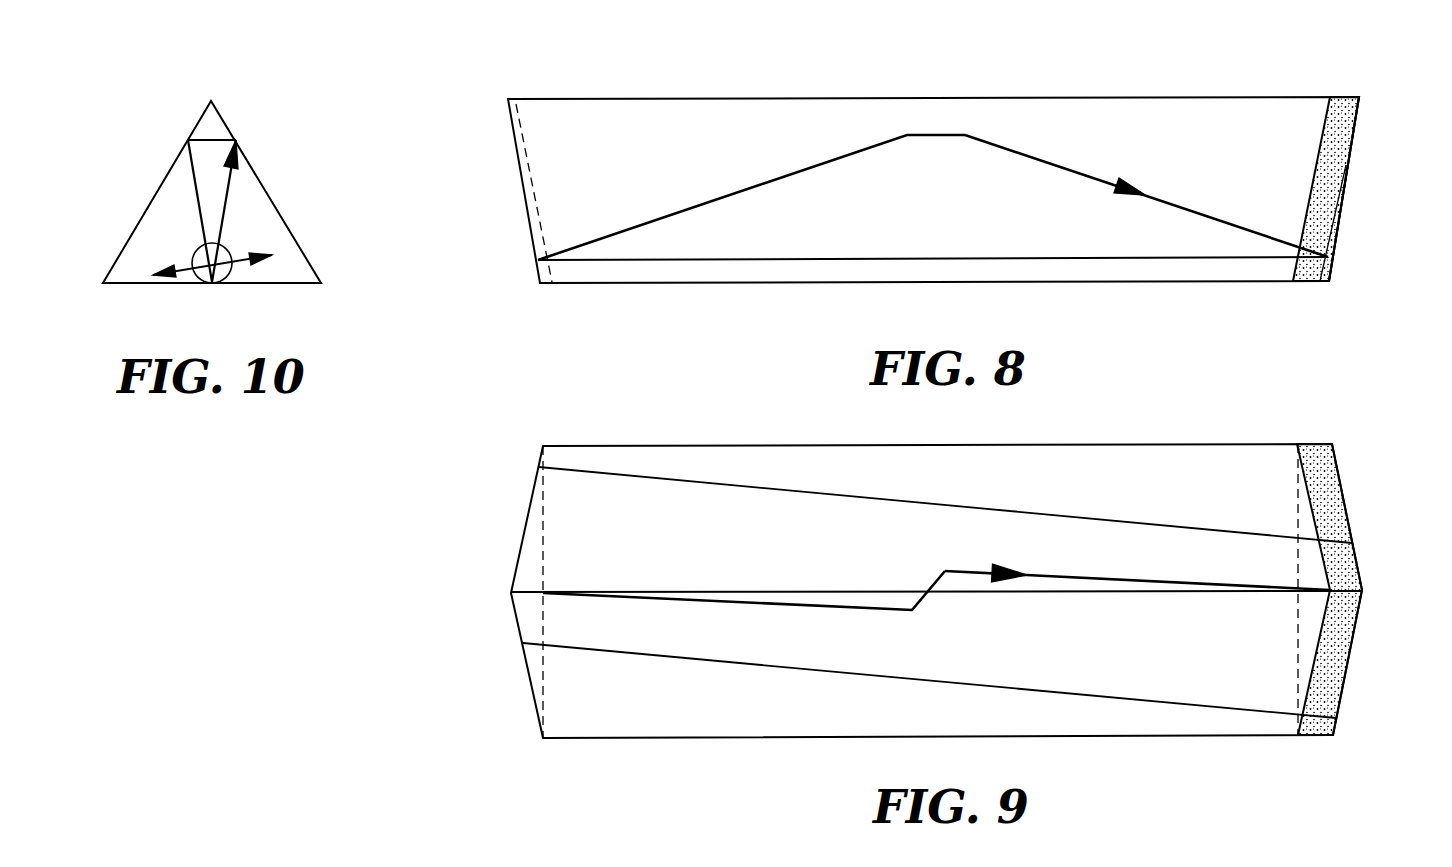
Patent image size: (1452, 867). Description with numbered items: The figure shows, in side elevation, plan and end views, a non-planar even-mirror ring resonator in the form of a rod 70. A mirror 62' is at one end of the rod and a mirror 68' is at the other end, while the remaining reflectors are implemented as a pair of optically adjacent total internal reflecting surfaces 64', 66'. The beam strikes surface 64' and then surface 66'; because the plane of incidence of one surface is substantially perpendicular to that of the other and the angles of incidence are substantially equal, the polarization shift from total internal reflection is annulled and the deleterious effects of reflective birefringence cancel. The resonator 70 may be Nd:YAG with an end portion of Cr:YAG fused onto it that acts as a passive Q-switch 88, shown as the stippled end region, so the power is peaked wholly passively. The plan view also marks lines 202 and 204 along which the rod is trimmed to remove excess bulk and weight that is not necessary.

In FIG. 8, the rod 70 is at (1222, 32).
In FIG. 10, the mirror 62' is at (223, 192).
In FIG. 8, the mirror 62' is at (895, 201).
In FIG. 9, the mirror 62' is at (936, 591).
In FIG. 10, the total internal reflecting surface 64' is at (269, 191).
In FIG. 8, the total internal reflecting surface 64' is at (751, 185).
In FIG. 9, the total internal reflecting surface 64' is at (774, 610).
In FIG. 10, the total internal reflecting surface 66' is at (170, 194).
In FIG. 8, the total internal reflecting surface 66' is at (1146, 183).
In FIG. 9, the total internal reflecting surface 66' is at (1109, 554).
In FIG. 8, the mirror 68' is at (1364, 189).
In FIG. 9, the mirror 68' is at (1358, 589).
In FIG. 8, the passive Q-switch 88 is at (1342, 118).
In FIG. 9, the trim line 202 is at (858, 496).
In FIG. 9, the trim line 204 is at (770, 665).